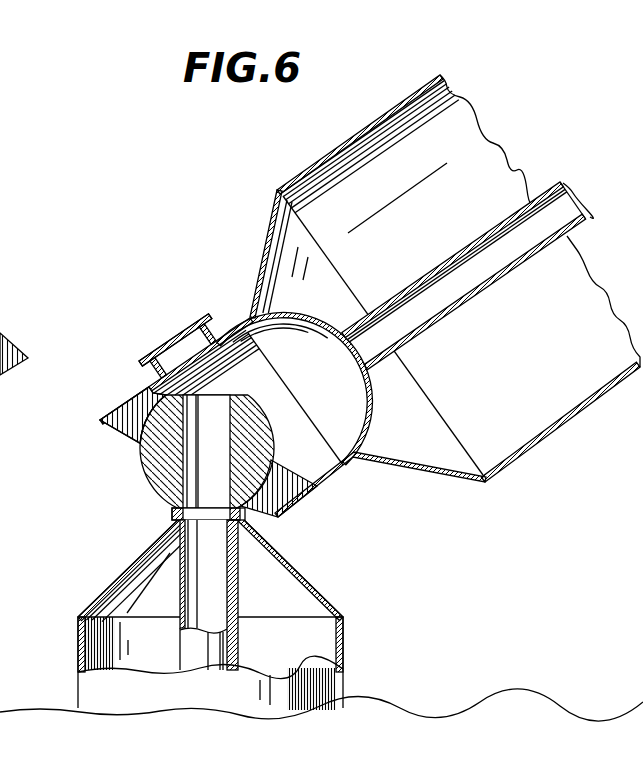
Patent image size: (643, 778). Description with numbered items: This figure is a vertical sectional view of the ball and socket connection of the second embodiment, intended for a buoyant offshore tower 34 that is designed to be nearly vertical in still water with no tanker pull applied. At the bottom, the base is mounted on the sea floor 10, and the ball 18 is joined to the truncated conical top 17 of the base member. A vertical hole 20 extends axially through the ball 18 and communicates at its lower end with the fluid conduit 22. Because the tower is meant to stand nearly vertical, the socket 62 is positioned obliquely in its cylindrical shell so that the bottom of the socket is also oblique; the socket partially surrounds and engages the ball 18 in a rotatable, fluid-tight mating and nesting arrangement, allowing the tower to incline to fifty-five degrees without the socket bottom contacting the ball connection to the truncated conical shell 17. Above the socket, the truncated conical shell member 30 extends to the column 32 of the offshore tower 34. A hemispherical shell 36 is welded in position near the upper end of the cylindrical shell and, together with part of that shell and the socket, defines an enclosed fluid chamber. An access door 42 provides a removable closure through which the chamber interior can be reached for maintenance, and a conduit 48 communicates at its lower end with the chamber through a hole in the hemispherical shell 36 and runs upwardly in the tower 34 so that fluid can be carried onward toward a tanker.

The sea floor 10 is at (437, 705).
The truncated conical top 17 is at (308, 581).
The ball 18 is at (148, 462).
The vertical hole 20 is at (197, 483).
The fluid conduit 22 is at (233, 643).
The truncated conical shell member 30 is at (410, 473).
The column 32 is at (543, 445).
The offshore tower 34 is at (276, 158).
The hemispherical shell 36 is at (305, 313).
The access door 42 is at (177, 338).
The conduit 48 is at (498, 225).
The socket 62 is at (130, 408).